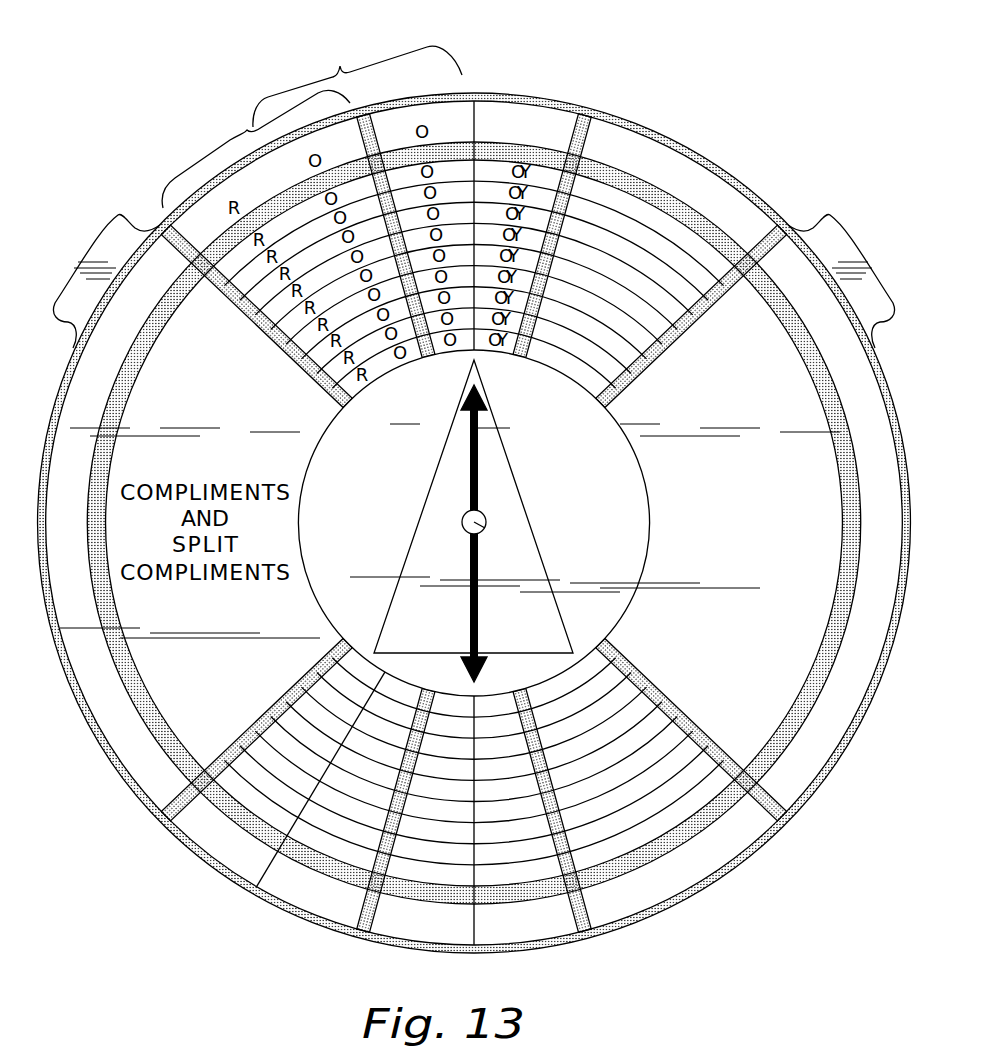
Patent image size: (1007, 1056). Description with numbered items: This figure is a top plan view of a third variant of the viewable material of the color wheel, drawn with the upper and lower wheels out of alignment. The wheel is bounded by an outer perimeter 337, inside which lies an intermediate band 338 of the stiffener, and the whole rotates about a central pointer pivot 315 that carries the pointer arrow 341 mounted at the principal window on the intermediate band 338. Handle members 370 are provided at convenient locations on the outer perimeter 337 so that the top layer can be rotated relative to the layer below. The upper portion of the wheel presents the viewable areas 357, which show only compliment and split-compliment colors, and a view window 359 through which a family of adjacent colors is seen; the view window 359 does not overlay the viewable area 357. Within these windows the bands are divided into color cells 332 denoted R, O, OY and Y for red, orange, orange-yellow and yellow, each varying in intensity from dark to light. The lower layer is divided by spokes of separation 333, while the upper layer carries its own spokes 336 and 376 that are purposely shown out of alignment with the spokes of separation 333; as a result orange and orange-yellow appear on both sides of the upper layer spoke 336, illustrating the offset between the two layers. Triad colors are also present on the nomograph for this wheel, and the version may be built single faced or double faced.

The pointer pivot 315 is at (486, 530).
The color cells 332 is at (633, 233).
The spokes of separation 333 is at (266, 180).
The upper layer spokes 336 is at (570, 134).
The outer perimeter 337 is at (820, 788).
The intermediate band 338 is at (788, 711).
The pointer arrow 341 is at (528, 120).
The viewable area 357 is at (338, 60).
The view window 359 is at (247, 128).
The handle member 370 is at (118, 230).
The upper layer spoke 376 is at (376, 135).